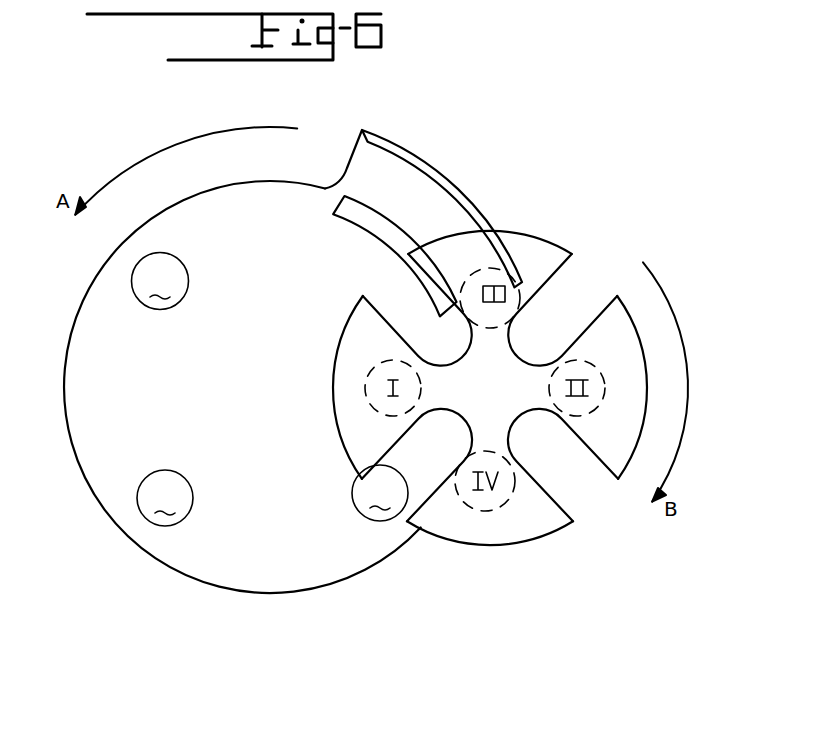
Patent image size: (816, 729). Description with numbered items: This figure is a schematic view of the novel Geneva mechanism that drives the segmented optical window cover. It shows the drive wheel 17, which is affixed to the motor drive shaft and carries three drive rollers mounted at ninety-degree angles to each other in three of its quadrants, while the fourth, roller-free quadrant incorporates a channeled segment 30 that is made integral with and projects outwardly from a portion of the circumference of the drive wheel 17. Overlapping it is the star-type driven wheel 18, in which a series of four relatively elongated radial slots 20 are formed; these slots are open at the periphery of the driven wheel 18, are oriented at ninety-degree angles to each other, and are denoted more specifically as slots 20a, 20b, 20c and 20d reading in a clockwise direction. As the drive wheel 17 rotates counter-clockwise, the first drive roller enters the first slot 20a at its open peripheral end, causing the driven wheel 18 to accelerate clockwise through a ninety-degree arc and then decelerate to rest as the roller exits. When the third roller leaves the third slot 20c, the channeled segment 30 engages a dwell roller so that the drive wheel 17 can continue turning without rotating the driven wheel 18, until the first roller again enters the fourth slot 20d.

The drive wheel 17 is at (88, 483).
The driven wheel 18 is at (527, 233).
The radial slots 20 is at (573, 290).
The first radial slot 20a is at (432, 478).
The second radial slot 20b is at (570, 440).
The third radial slot 20c is at (545, 292).
The fourth radial slot 20d is at (391, 325).
The channeled segment 30 is at (443, 173).